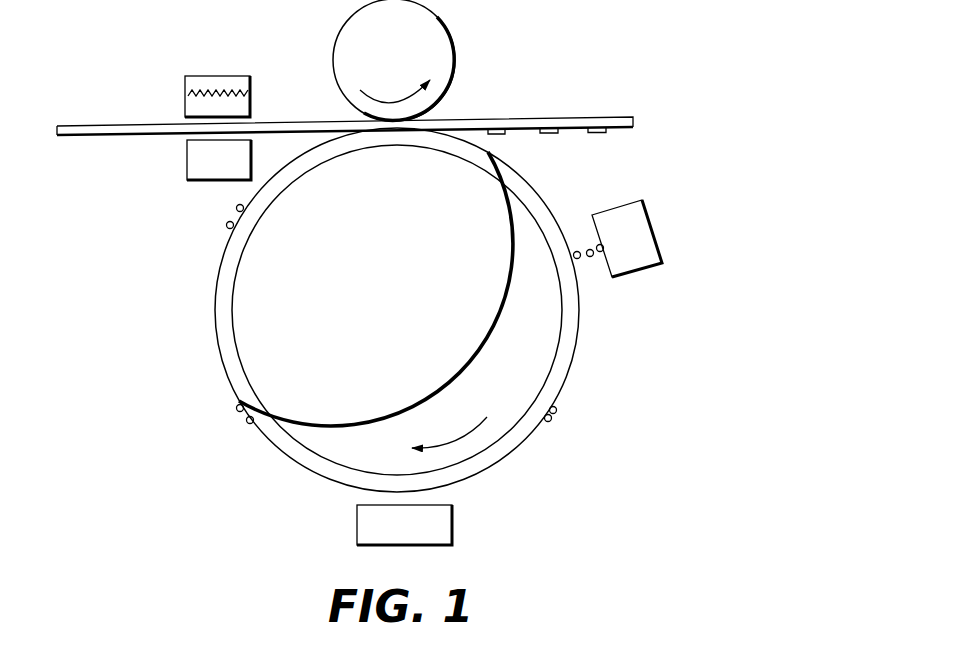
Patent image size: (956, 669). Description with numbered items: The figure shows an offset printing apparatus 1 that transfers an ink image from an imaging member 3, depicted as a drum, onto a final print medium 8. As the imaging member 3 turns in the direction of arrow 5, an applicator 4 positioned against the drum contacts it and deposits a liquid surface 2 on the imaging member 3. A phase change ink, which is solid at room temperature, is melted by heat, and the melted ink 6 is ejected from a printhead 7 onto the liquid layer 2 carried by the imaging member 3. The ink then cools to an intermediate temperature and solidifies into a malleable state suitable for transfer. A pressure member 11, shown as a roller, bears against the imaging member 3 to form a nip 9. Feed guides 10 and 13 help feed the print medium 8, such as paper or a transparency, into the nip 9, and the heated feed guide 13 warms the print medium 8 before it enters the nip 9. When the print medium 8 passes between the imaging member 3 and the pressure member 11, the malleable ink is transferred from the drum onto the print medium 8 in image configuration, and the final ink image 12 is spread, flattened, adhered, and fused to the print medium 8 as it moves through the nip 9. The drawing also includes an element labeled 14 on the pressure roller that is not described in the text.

The offset printing apparatus 1 is at (572, 73).
The liquid surface 2 is at (579, 327).
The imaging member 3 is at (556, 357).
The applicator 4 is at (453, 522).
The arrow 5 is at (461, 432).
The melted ink 6 is at (582, 240).
The printhead 7 is at (647, 233).
The print medium 8 is at (78, 125).
The nip 9 is at (350, 115).
The feed guide 10 is at (202, 180).
The pressure member 11 is at (456, 43).
The final ink image 12 is at (605, 133).
The heated feed guide 13 is at (220, 76).
The roller rotation direction 14 is at (420, 92).